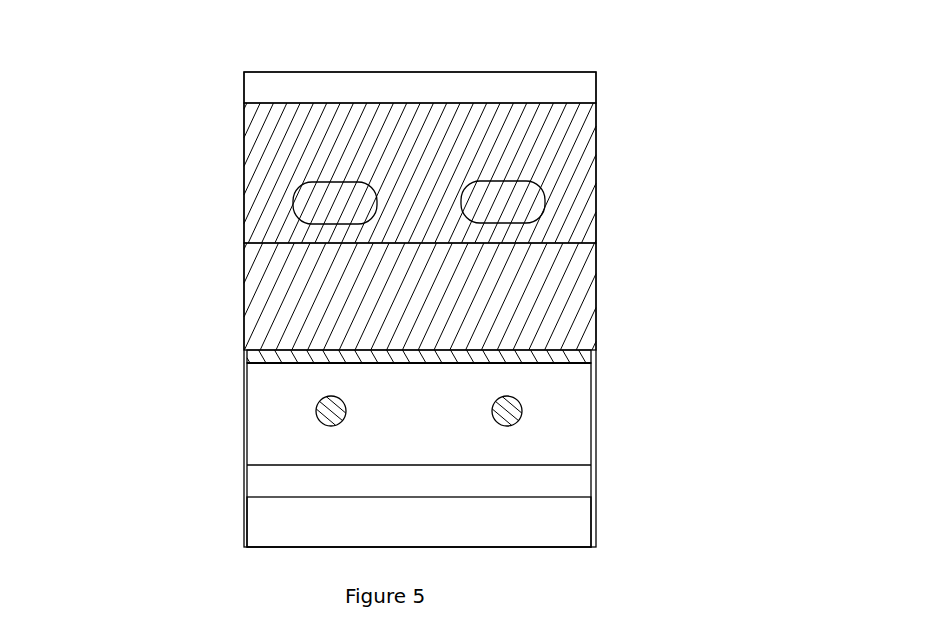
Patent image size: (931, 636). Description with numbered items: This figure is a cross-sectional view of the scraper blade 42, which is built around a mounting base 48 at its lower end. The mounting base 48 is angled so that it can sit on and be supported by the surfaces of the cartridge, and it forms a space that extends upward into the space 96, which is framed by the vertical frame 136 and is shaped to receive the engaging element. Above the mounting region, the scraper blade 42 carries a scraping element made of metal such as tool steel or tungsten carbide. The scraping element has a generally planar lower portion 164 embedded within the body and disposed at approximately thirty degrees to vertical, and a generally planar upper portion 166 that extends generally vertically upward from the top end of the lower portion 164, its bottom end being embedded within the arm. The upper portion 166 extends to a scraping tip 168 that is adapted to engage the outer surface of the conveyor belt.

The scraper blade 42 is at (622, 330).
The mounting base 48 is at (287, 508).
The space 96 is at (280, 421).
The vertical frame 136 is at (565, 427).
The lower portion 164 is at (293, 286).
The upper portion 166 is at (593, 153).
The scraping tip 168 is at (250, 78).